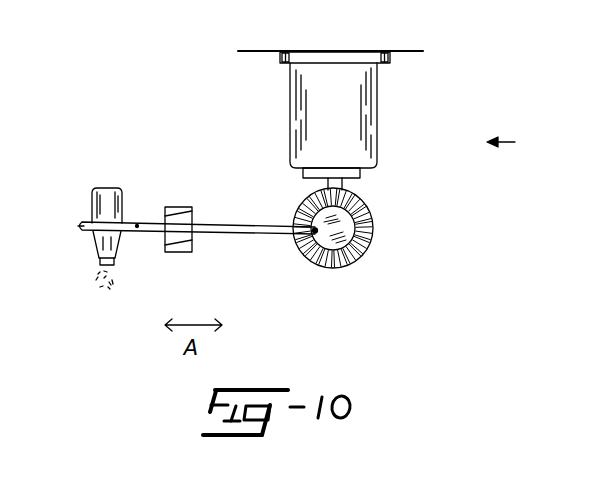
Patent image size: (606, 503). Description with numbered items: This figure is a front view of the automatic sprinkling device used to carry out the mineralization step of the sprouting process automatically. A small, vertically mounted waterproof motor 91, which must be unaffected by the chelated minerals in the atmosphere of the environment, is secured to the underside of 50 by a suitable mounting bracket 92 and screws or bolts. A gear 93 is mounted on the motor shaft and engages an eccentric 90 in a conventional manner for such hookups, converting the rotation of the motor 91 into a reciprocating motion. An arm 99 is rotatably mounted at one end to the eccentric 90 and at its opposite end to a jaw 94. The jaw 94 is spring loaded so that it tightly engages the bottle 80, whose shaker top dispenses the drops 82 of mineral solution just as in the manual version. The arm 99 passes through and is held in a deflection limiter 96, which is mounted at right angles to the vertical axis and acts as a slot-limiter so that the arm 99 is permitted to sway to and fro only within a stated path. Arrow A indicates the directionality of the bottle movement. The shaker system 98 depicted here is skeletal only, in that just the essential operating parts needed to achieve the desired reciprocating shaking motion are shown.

The underside mounting surface 50 is at (253, 51).
The mounting bracket 92 is at (390, 61).
The motor 91 is at (378, 128).
The gear 93 is at (355, 188).
The eccentric 90 is at (368, 245).
The arm 99 is at (242, 222).
The deflection limiter 96 is at (177, 207).
The bottle 80 is at (92, 193).
The jaw 94 is at (77, 230).
The drops 82 is at (102, 280).
The shaker system 98 is at (516, 144).